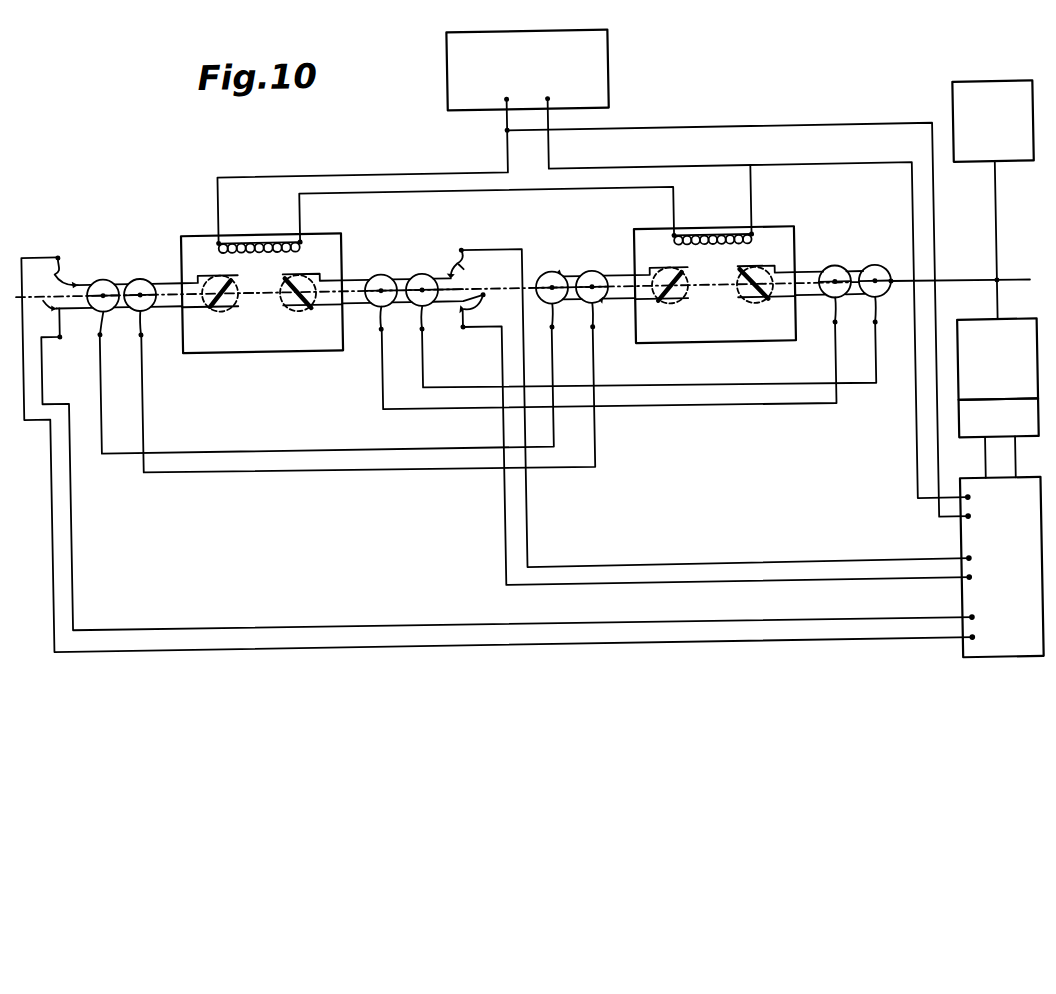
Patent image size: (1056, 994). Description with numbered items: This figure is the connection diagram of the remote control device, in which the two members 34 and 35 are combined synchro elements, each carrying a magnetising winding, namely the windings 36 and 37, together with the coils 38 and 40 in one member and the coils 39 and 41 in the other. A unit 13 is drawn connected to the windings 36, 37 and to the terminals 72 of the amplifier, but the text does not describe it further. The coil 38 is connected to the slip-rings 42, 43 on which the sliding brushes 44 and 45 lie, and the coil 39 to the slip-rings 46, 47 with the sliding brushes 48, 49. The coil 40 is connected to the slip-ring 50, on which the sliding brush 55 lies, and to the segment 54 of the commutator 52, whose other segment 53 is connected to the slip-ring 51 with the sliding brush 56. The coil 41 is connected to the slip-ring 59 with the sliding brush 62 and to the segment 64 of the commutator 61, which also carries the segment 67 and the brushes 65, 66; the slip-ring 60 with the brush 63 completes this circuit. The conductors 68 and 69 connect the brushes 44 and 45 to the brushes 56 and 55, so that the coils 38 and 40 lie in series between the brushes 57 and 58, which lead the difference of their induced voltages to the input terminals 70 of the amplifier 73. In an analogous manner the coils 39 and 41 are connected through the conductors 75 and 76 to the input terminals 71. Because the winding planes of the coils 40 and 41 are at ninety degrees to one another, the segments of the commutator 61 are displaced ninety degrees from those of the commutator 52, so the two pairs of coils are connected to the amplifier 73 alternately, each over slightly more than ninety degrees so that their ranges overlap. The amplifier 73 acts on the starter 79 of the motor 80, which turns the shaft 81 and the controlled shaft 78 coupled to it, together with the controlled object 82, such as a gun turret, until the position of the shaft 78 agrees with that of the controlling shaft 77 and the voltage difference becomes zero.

The current source 13 is at (591, 276).
The combined synchro member 34 is at (790, 240).
The combined synchro member 35 is at (196, 237).
The magnetising winding 36 is at (755, 237).
The magnetising winding 37 is at (296, 234).
The coil 38 is at (752, 311).
The coil 39 is at (690, 278).
The coil 40 is at (304, 306).
The coil 41 is at (235, 278).
The slip-ring 42 is at (868, 274).
The slip-ring 43 is at (828, 272).
The sliding brush 44 is at (888, 310).
The sliding brush 45 is at (847, 311).
The slip-ring 46 is at (592, 272).
The slip-ring 47 is at (559, 274).
The sliding brush 48 is at (607, 315).
The sliding brush 49 is at (566, 316).
The slip-ring 50 is at (378, 272).
The slip-ring 51 is at (418, 272).
The commutator 52 is at (715, 390).
The commutator segment 53 is at (485, 294).
The commutator segment 54 is at (465, 267).
The sliding brush 55 is at (395, 319).
The sliding brush 56 is at (435, 318).
The sliding brush 57 is at (714, 441).
The sliding brush 58 is at (464, 249).
The slip-ring 59 is at (142, 271).
The slip-ring 60 is at (106, 271).
The commutator 61 is at (496, 434).
The sliding brush 62 is at (155, 323).
The sliding brush 63 is at (113, 324).
The commutator segment 64 is at (83, 270).
The brush 65 is at (72, 258).
The brush 66 is at (506, 463).
The commutator segment 67 is at (40, 319).
The conductor 68 is at (743, 383).
The conductor 69 is at (743, 405).
The input terminals 70 is at (983, 567).
The input terminals 71 is at (984, 627).
The terminal pair 72 is at (982, 506).
The amplifier 73 is at (1002, 567).
The conductor 75 is at (424, 468).
The conductor 76 is at (362, 448).
The controlling shaft 77 is at (255, 295).
The controlled shaft 78 is at (959, 288).
The starter 79 is at (999, 438).
The motor 80 is at (997, 358).
The motor shaft 81 is at (1004, 276).
The controlled object 82 is at (992, 120).